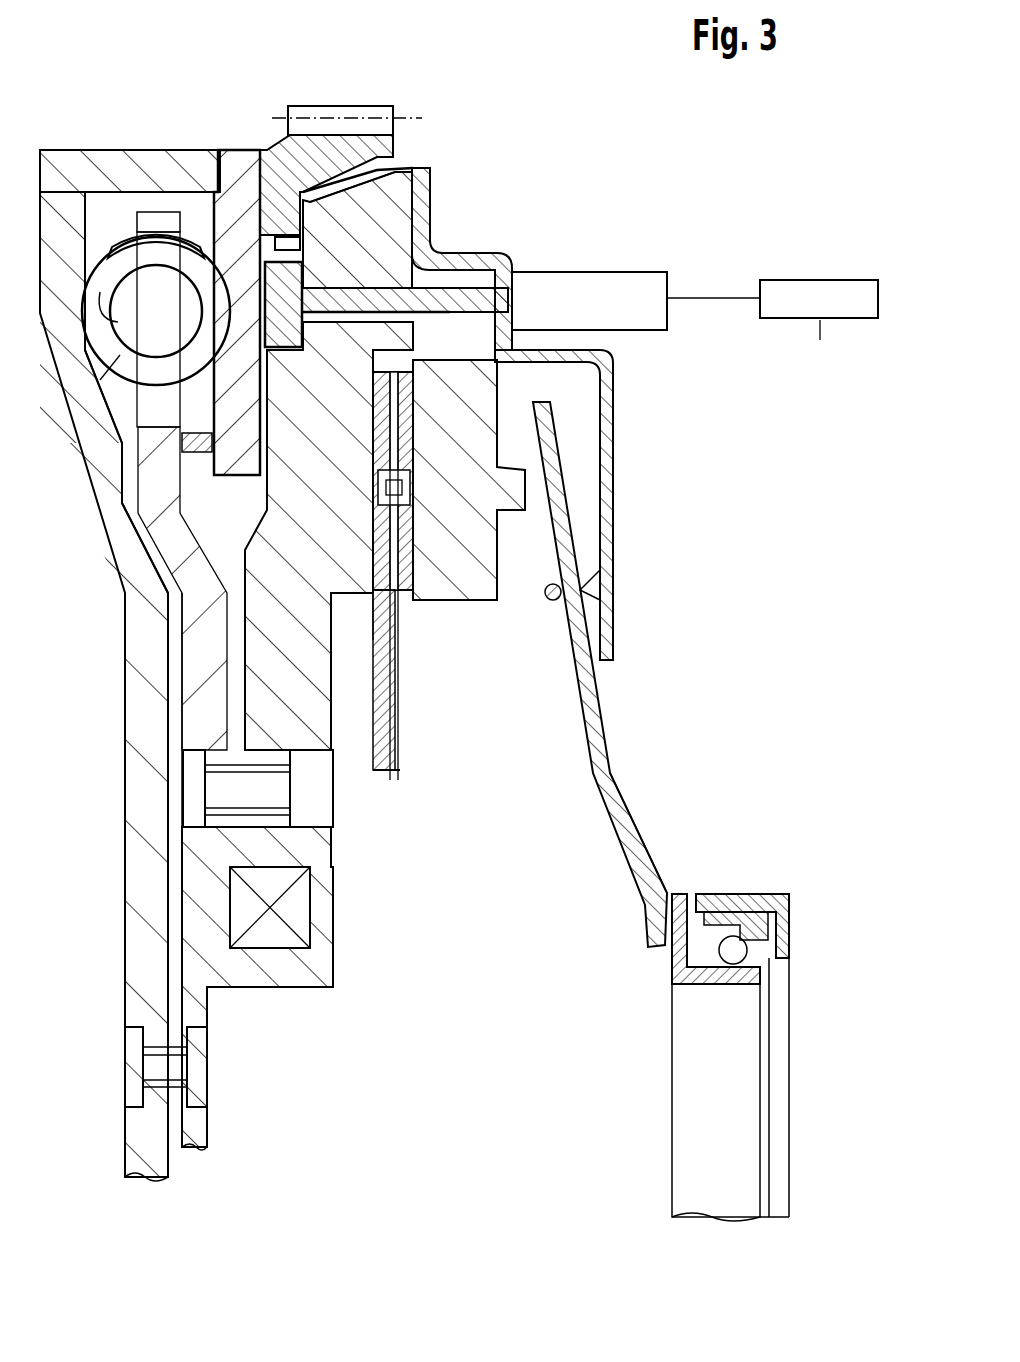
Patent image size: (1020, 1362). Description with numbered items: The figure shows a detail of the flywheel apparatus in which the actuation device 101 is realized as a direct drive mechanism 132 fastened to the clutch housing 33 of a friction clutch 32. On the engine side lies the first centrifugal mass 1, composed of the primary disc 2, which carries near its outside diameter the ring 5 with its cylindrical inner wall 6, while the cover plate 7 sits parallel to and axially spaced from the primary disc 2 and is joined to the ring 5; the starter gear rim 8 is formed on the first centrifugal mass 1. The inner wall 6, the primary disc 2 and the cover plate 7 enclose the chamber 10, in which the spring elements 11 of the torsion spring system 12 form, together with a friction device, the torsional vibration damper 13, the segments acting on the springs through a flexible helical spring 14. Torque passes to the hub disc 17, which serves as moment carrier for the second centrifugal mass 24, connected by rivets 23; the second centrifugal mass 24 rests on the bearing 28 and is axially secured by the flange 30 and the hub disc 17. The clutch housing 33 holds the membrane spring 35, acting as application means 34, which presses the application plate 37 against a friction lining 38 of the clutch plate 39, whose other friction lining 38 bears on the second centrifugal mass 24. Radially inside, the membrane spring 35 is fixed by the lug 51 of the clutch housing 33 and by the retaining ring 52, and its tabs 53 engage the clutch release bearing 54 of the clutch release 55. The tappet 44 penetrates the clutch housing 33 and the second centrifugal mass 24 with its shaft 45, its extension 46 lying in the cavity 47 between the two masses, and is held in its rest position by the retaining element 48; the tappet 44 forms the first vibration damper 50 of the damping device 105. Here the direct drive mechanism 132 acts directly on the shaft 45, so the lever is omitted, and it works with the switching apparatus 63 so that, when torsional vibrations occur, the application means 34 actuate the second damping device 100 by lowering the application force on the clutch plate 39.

The first centrifugal mass 1 is at (124, 702).
The primary disc 2 is at (135, 842).
The ring 5 is at (133, 152).
The inner wall 6 is at (178, 195).
The cover plate 7 is at (236, 452).
The starter gear rim 8 is at (320, 118).
The chamber 10 is at (128, 405).
The spring elements 11 is at (120, 360).
The torsion spring system 12 is at (110, 360).
The torsional vibration damper 13 is at (177, 520).
The flexible helical spring 14 is at (125, 243).
The hub disc 17 is at (180, 560).
The rivets 23 is at (300, 838).
The second centrifugal mass 24 is at (335, 760).
The bearing 28 is at (270, 990).
The flange 30 is at (318, 908).
The friction clutch 32 is at (412, 692).
The clutch housing 33 is at (607, 570).
The application means 34 is at (626, 746).
The membrane spring 35 is at (598, 702).
The application plate 37 is at (470, 602).
The friction lining 38 is at (382, 600).
The clutch plate 39 is at (395, 772).
The tappet 44 is at (437, 265).
The shaft 45 is at (437, 300).
The extension 46 is at (335, 178).
The cavity 47 is at (265, 245).
The retaining element 48 is at (420, 318).
The first vibration damper 50 is at (380, 185).
The lug 51 is at (612, 600).
The retaining ring 52 is at (553, 604).
The tabs 53 is at (670, 890).
The clutch release bearing 54 is at (750, 893).
The clutch release 55 is at (793, 930).
The switching apparatus 63 is at (810, 290).
The second damping device 100 is at (432, 537).
The actuation device 101 is at (822, 335).
The damping device 105 is at (430, 420).
The direct drive mechanism 132 is at (650, 285).